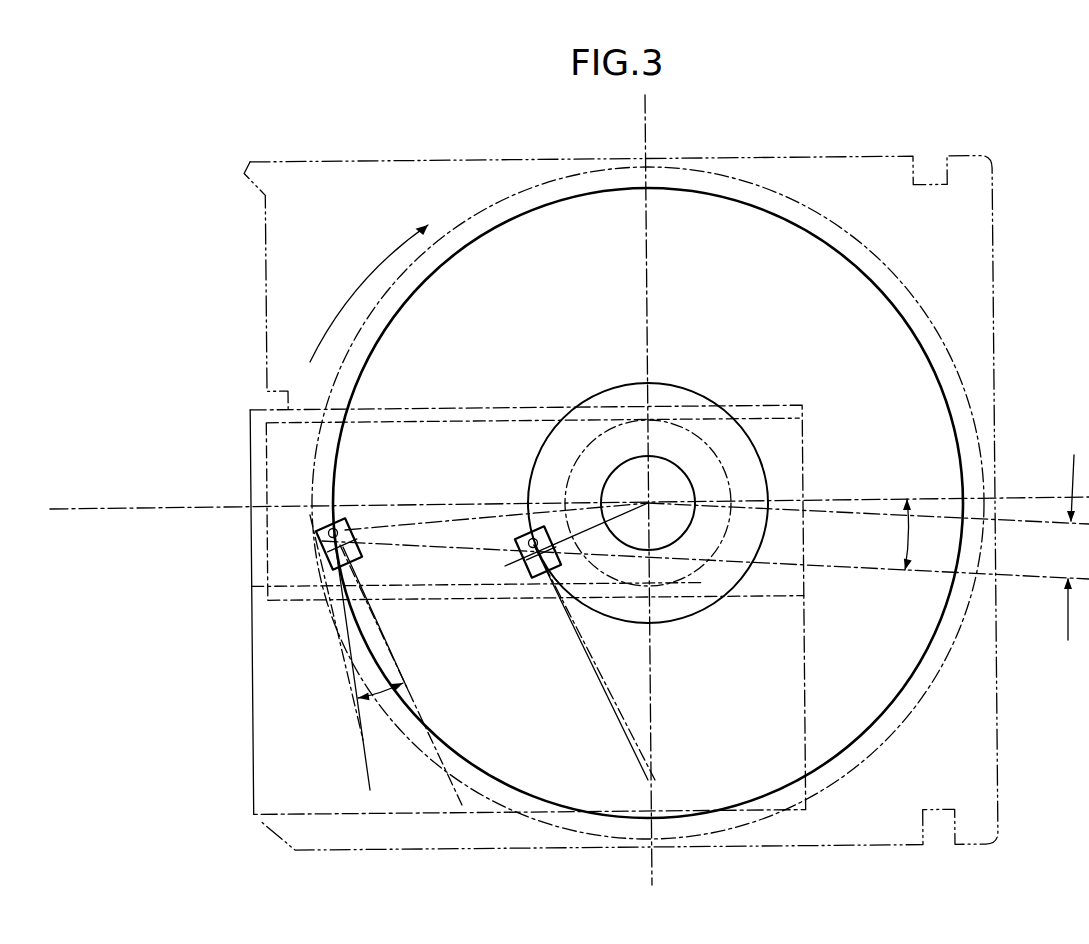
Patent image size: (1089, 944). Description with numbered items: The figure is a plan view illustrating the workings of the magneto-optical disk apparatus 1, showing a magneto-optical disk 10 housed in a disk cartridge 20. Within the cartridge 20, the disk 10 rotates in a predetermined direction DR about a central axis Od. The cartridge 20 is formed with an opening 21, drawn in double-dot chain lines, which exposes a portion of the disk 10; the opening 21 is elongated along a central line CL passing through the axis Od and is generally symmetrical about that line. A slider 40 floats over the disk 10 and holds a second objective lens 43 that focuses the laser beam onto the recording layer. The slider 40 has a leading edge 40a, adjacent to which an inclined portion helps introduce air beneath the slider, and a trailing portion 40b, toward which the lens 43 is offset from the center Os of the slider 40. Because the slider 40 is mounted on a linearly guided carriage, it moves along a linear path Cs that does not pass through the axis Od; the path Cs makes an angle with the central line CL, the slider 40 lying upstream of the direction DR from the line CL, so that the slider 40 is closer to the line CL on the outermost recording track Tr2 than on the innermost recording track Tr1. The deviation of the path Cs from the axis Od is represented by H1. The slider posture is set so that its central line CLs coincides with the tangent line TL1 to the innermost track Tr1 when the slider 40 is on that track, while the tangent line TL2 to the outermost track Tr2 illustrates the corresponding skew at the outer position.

The magneto-optical disk apparatus 1 is at (208, 312).
The magneto-optical disk 10 is at (452, 225).
The disk cartridge 20 is at (714, 159).
The opening 21 is at (445, 424).
The slider 40 is at (554, 558).
The leading edge 40a is at (558, 567).
The trailing portion 40b is at (540, 525).
The second objective lens 43 is at (361, 544).
The central line CL is at (170, 505).
The central line of the slider CLs is at (427, 753).
The path of the slider Cs is at (468, 552).
The center of the slider Os is at (326, 550).
The central axis Od is at (648, 503).
The innermost recording track Tr1 is at (600, 395).
The outermost recording track Tr2 is at (412, 290).
The tangent line to the innermost track TL1 is at (610, 705).
The tangent line to the outermost track TL2 is at (362, 737).
The disk-rotating direction DR is at (362, 293).
The deviation of the slider path H1 is at (1057, 547).